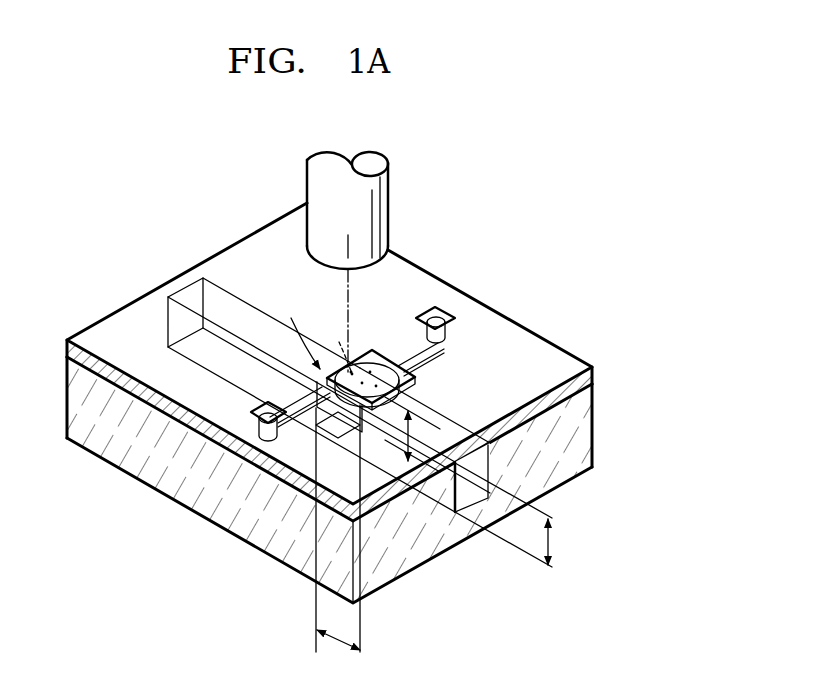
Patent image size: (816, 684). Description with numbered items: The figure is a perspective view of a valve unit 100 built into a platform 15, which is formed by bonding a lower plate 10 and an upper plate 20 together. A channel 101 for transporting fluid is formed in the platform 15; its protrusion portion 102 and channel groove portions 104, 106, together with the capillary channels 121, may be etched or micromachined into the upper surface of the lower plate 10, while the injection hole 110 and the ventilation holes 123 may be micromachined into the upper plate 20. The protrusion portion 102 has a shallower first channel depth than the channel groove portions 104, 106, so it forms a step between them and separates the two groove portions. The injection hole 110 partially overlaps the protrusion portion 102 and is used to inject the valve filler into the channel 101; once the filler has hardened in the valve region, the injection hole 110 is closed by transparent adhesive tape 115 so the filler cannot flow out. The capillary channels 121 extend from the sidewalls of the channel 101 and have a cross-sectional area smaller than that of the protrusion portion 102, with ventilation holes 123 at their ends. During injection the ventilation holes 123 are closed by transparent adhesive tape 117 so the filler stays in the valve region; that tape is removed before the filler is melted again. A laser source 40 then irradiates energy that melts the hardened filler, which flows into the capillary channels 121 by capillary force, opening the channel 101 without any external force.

The valve unit 100 is at (153, 205).
The laser source 40 is at (390, 196).
The platform 15 is at (644, 367).
The upper plate 20 is at (593, 375).
The lower plate 10 is at (593, 431).
The channel 101 is at (248, 603).
The protrusion portion 102 is at (335, 432).
The channel groove portion 104 is at (207, 352).
The channel groove portion 106 is at (370, 420).
The injection hole 110 is at (420, 380).
The transparent adhesive tape 115 is at (373, 349).
The transparent adhesive tape 117 is at (437, 306).
The capillary channels 121 is at (425, 356).
The ventilation holes 123 is at (448, 331).